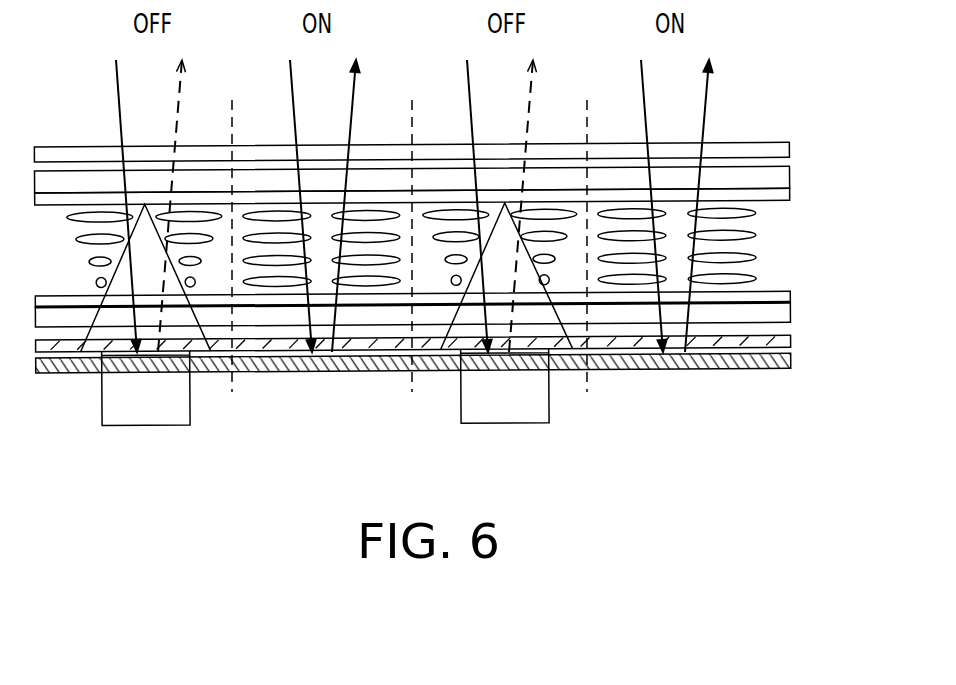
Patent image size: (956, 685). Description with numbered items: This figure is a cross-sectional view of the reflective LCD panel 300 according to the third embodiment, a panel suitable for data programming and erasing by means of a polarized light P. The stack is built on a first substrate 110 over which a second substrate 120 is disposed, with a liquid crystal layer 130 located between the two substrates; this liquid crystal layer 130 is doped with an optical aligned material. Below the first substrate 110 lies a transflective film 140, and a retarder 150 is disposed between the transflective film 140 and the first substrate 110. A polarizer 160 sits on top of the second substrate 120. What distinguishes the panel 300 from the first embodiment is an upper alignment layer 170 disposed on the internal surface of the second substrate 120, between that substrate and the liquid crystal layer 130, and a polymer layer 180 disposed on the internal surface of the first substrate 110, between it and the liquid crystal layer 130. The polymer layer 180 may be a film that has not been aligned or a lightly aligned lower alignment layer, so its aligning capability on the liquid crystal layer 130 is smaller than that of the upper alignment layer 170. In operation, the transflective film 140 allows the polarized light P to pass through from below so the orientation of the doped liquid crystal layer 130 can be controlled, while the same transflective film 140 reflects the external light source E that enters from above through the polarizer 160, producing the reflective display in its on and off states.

The reflective LCD panel 300 is at (760, 500).
The first substrate 110 is at (773, 315).
The second substrate 120 is at (780, 177).
The liquid crystal layer 130 is at (742, 234).
The transflective film 140 is at (785, 364).
The retarder 150 is at (773, 341).
The polarizer 160 is at (777, 150).
The upper alignment layer 170 is at (763, 197).
The polymer layer 180 is at (763, 297).
The polarized light P is at (175, 402).
The external light source E is at (118, 107).